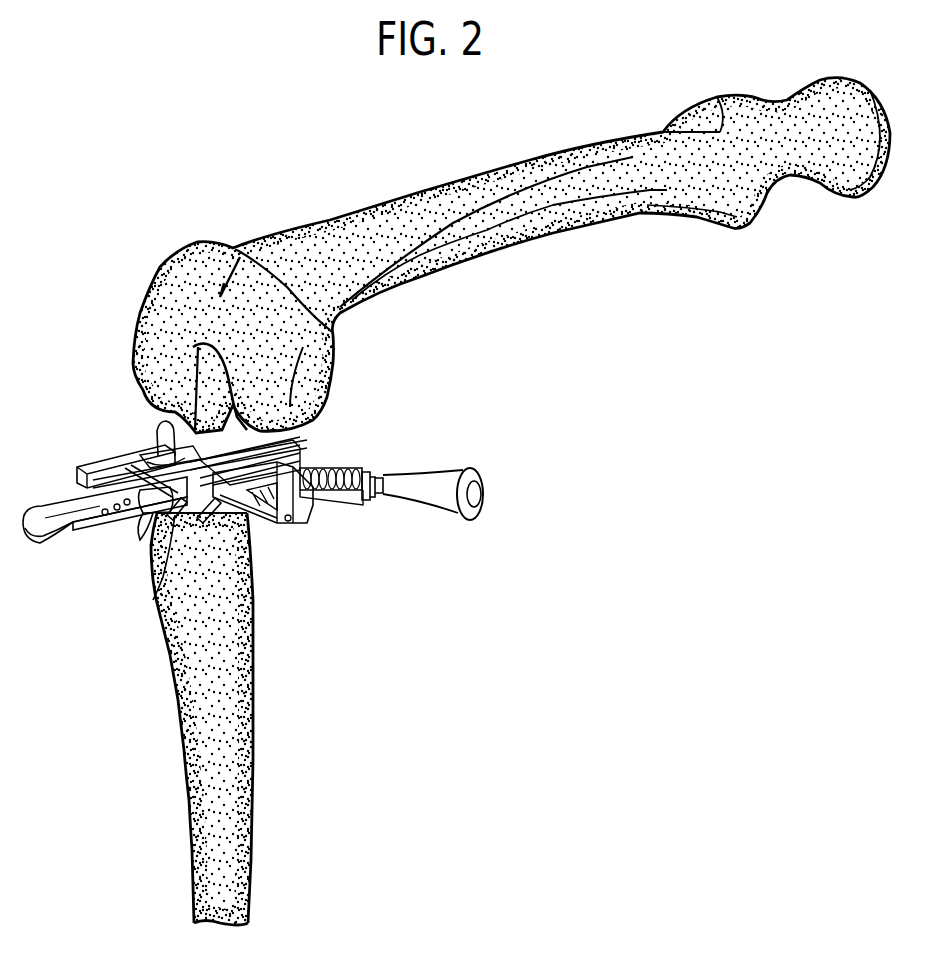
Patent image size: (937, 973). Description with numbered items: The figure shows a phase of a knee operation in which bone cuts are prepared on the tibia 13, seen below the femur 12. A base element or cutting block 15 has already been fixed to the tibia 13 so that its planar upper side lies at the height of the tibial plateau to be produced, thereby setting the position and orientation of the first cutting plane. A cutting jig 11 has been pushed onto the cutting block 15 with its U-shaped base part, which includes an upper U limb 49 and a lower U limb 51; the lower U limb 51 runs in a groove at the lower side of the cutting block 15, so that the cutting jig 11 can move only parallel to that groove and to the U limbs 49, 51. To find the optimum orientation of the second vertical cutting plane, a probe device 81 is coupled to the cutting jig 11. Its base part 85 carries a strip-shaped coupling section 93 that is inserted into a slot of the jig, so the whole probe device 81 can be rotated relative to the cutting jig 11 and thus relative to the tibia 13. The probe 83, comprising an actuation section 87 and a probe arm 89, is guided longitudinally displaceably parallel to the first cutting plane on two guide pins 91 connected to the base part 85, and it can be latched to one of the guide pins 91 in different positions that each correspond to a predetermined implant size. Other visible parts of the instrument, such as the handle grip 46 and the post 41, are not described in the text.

The cutting jig 11 is at (375, 464).
The femur 12 is at (498, 175).
The tibia 13 is at (235, 795).
The base element, cutting block 15 is at (155, 598).
The alignment post 41 is at (152, 410).
The handle grip 46 is at (447, 493).
The upper U limb 49 is at (310, 450).
The lower U limb 51 is at (253, 547).
The probe device 81 is at (65, 541).
The probe 83 is at (110, 522).
The base part 85 is at (97, 456).
The actuation section 87 is at (55, 510).
The probe arm 89 is at (287, 428).
The guide pins 91 is at (140, 535).
The coupling section 93 is at (230, 385).